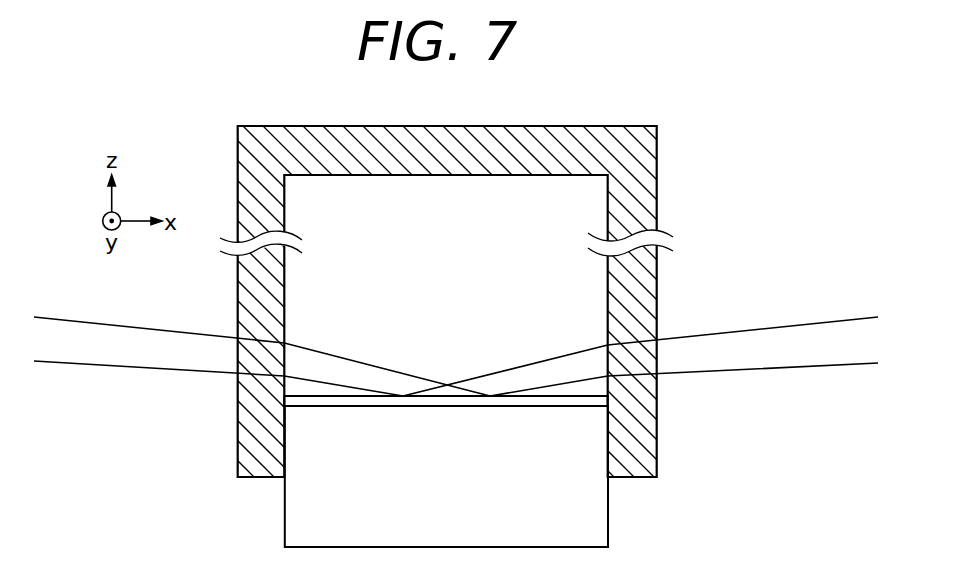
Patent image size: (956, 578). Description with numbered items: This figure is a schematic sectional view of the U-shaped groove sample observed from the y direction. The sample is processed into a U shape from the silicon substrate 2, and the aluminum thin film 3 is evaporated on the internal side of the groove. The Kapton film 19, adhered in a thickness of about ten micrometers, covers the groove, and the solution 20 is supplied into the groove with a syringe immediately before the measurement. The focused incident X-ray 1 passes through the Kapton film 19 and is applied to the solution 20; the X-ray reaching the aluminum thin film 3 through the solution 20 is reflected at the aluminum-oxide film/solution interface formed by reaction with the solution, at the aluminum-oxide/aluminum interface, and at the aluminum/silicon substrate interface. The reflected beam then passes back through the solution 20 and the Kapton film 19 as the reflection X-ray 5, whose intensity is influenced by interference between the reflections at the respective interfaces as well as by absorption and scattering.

The incident X-ray 1 is at (114, 357).
The silicon substrate 2 is at (283, 505).
The aluminum thin film 3 is at (348, 402).
The reflection X-ray 5 is at (771, 338).
The Kapton film 19 is at (622, 137).
The solution 20 is at (590, 200).